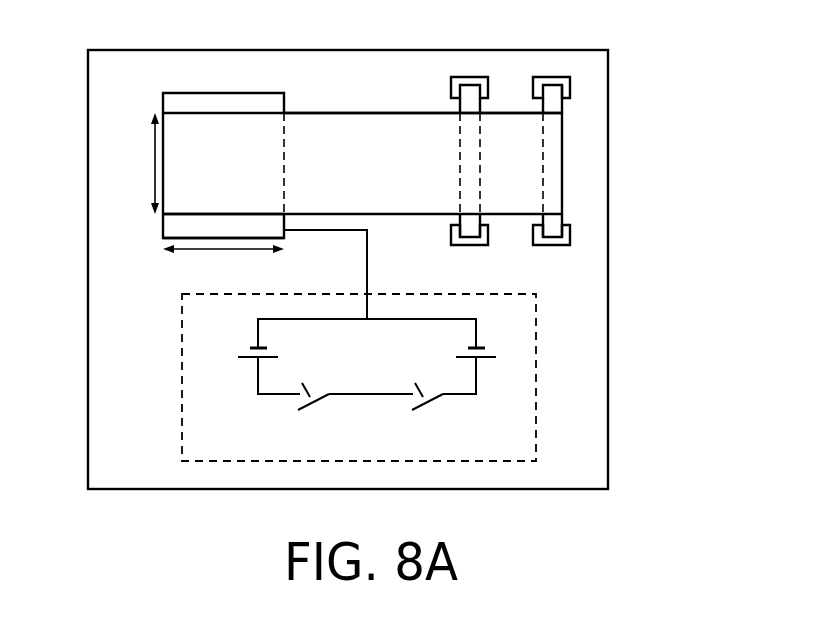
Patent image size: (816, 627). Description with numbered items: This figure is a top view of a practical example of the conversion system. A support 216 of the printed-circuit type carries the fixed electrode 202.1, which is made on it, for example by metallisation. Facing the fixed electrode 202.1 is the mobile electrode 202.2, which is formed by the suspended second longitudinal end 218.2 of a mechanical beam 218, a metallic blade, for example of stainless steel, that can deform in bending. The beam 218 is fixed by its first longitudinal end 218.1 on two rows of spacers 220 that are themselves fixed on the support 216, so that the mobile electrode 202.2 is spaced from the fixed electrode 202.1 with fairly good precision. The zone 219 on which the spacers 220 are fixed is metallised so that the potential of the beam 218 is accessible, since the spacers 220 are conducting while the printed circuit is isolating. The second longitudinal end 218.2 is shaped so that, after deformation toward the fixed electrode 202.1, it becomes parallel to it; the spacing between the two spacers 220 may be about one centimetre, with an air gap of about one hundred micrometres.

The support 216 is at (587, 428).
The fixed electrode 202.1 is at (204, 84).
The mobile electrode 202.2 is at (375, 132).
The mechanical beam 218 is at (326, 100).
The first longitudinal end 218.1 is at (528, 170).
The second longitudinal end 218.2 is at (213, 198).
The spacers 220 is at (470, 90).
The zone 219 is at (585, 250).